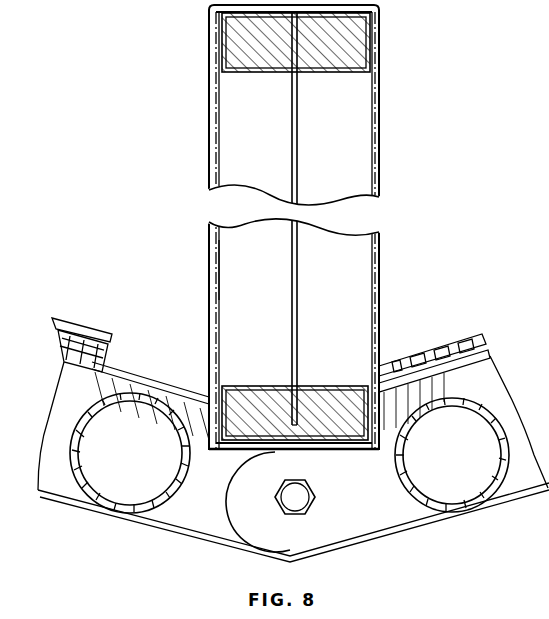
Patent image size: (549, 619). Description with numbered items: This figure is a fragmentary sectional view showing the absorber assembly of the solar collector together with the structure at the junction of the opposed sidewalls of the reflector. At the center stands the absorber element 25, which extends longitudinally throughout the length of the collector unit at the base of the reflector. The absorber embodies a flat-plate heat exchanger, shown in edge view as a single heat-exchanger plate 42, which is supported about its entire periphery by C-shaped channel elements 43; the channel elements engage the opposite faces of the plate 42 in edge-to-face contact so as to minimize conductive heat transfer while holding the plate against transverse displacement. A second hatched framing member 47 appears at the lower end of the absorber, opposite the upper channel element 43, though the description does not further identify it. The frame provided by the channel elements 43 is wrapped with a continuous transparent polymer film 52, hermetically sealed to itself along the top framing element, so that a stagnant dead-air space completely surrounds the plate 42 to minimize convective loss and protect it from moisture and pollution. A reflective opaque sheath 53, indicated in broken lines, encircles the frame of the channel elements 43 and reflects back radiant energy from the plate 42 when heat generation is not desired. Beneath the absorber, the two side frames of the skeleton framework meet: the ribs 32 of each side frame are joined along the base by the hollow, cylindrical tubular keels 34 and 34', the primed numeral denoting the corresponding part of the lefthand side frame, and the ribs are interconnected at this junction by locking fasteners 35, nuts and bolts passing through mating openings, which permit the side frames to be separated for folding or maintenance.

The absorber element 25 is at (378, 145).
The C-shaped channel element 43 is at (352, 76).
The lower elastomeric block 47 is at (252, 396).
The heat-exchanger plate 42 is at (292, 180).
The reflective opaque sheath 53 is at (380, 224).
The transparent polymer film 52 is at (219, 276).
The rib 32 is at (185, 538).
The keel 34 is at (130, 474).
The keel 34' is at (452, 481).
The locking fastener 35 is at (300, 500).